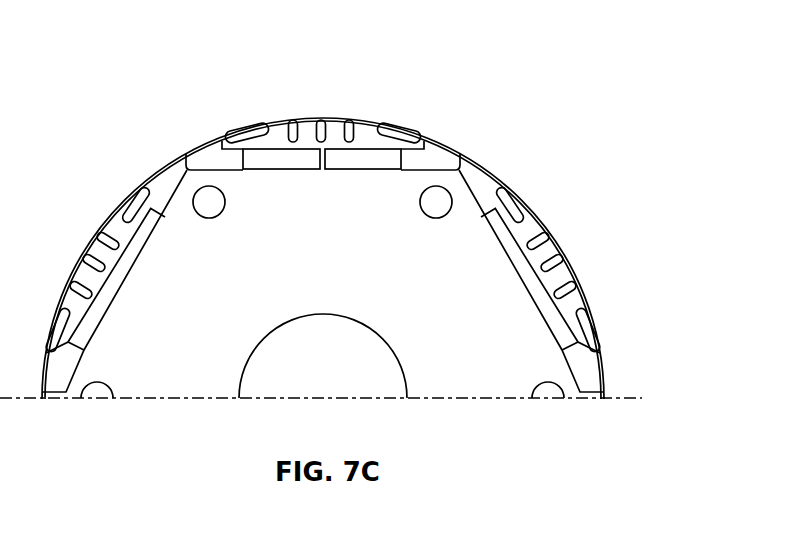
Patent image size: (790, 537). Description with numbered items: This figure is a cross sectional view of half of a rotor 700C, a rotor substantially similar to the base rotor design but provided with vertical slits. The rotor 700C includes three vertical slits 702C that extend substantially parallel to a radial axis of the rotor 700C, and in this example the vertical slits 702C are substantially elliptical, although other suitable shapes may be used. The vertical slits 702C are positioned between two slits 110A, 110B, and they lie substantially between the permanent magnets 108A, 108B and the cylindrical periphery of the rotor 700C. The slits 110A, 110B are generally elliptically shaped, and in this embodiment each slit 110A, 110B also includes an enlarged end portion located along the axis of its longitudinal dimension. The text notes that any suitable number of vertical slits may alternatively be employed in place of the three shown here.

The rotor 700C is at (582, 66).
The vertical slits 702C is at (311, 120).
The permanent magnet 108A is at (287, 160).
The permanent magnet 108B is at (365, 160).
The slit 110A is at (248, 127).
The slit 110B is at (398, 127).